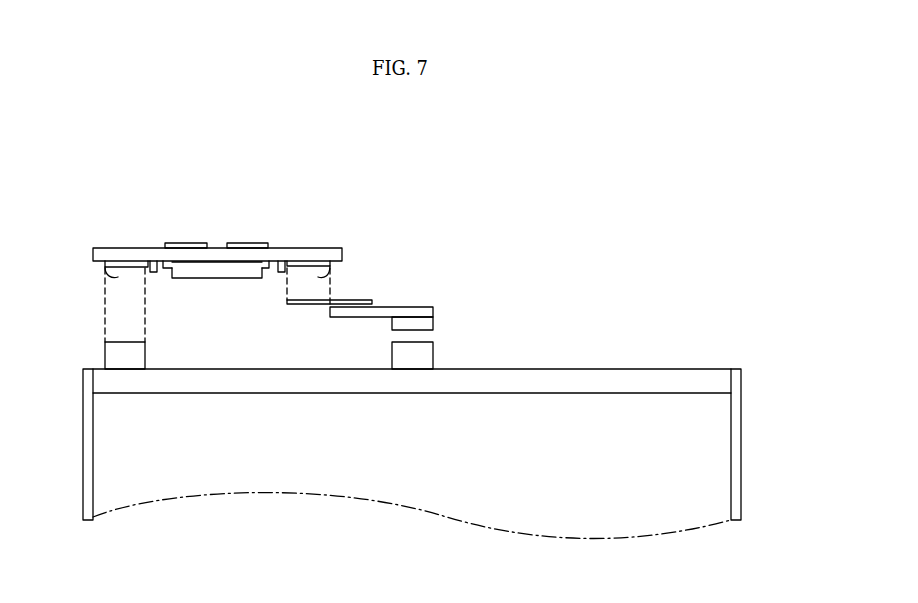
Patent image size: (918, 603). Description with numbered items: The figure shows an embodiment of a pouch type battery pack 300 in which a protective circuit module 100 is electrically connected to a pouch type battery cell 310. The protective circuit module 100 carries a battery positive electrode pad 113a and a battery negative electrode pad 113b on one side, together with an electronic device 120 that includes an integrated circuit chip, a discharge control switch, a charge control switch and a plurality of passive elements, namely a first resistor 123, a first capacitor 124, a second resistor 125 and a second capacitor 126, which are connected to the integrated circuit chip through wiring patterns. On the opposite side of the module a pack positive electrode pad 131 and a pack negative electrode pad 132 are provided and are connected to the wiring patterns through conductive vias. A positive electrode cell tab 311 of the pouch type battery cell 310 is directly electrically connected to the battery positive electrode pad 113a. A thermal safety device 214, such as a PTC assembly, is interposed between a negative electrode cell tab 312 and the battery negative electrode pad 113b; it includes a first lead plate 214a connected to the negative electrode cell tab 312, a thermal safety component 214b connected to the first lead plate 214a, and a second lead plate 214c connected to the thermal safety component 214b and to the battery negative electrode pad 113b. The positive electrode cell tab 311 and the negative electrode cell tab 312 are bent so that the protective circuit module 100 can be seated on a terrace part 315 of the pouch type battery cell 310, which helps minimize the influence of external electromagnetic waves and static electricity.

The protective circuit module 100 is at (338, 243).
The battery positive electrode pad 113a is at (118, 267).
The battery negative electrode pad 113b is at (320, 267).
The electronic device 120 is at (188, 282).
The first resistor 123 is at (152, 260).
The first capacitor 124 is at (168, 260).
The second resistor 125 is at (265, 260).
The second capacitor 126 is at (283, 260).
The pack positive electrode pad 131 is at (195, 243).
The pack negative electrode pad 132 is at (235, 243).
The thermal safety device 214 is at (367, 301).
The first lead plate 214a is at (433, 313).
The thermal safety component 214b is at (330, 309).
The second lead plate 214c is at (287, 302).
The pouch type battery pack 300 is at (430, 368).
The pouch type battery cell 310 is at (451, 433).
The positive electrode cell tab 311 is at (108, 350).
The negative electrode cell tab 312 is at (433, 353).
The terrace part 315 is at (583, 377).